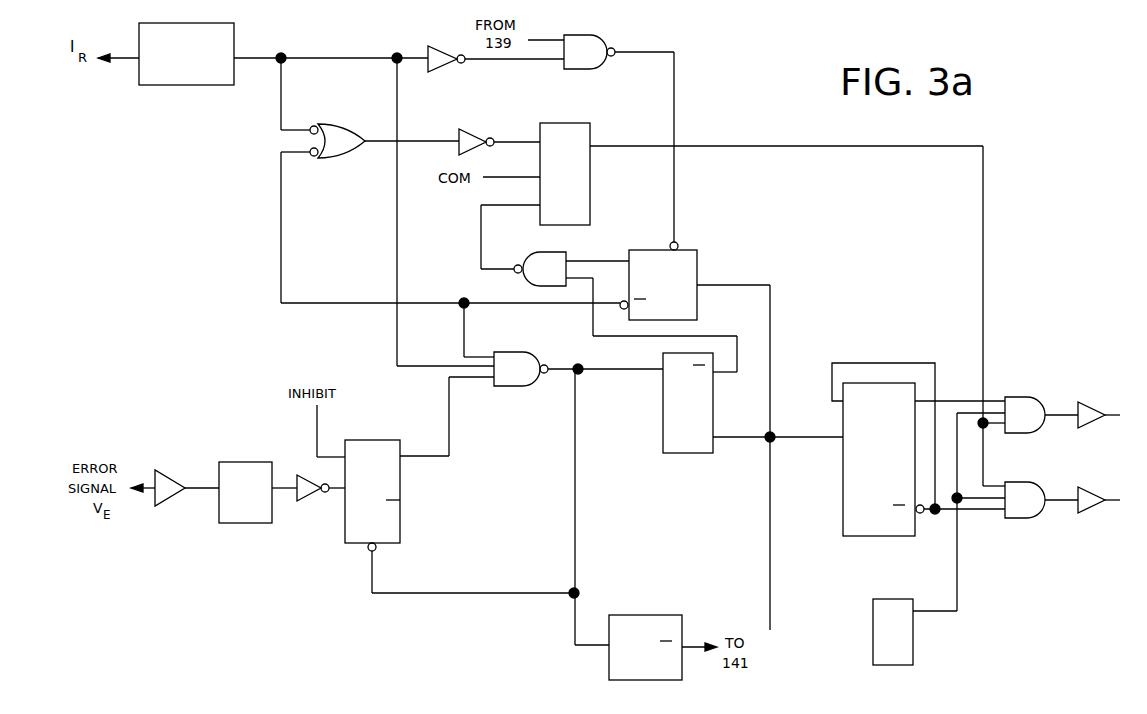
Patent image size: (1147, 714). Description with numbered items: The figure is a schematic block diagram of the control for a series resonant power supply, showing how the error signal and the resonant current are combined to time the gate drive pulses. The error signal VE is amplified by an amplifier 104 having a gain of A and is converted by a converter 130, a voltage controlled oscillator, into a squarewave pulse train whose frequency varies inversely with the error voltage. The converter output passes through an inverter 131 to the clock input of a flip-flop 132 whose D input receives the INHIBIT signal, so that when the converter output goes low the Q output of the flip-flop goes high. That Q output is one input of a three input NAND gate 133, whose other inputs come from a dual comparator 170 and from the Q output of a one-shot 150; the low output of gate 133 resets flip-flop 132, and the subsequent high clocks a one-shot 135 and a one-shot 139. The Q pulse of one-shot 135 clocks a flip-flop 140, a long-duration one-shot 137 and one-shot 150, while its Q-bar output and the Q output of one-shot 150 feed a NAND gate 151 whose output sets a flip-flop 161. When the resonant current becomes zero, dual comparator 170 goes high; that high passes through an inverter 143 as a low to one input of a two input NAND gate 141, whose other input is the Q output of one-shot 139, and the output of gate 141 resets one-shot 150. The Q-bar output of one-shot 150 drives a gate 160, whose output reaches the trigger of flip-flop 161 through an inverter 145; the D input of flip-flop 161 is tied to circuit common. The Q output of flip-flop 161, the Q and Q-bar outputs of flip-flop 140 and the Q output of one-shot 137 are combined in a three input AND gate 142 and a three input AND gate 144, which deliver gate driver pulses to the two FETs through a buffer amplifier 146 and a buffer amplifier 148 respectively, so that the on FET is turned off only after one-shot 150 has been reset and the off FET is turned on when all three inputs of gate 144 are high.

The amplifier 104 is at (172, 468).
The converter 130 is at (254, 518).
The inverter 131 is at (307, 498).
The flip-flop 132 is at (403, 500).
The three input NAND gate 133 is at (520, 378).
The one-shot 135 is at (677, 440).
The one-shot 137 is at (907, 641).
The one-shot 139 is at (642, 620).
The flip-flop 140 is at (860, 512).
The two input NAND gate 141 is at (590, 42).
The AND gate 142 is at (1020, 402).
The inverter 143 is at (440, 50).
The AND gate 144 is at (1022, 508).
The inverter 145 is at (470, 136).
The buffer amplifier 146 is at (1090, 410).
The buffer amplifier 148 is at (1092, 508).
The one-shot 150 is at (690, 260).
The NAND gate 151 is at (541, 260).
The NAND gate 160 is at (338, 148).
The flip-flop 161 is at (575, 122).
The dual comparator 170 is at (218, 30).